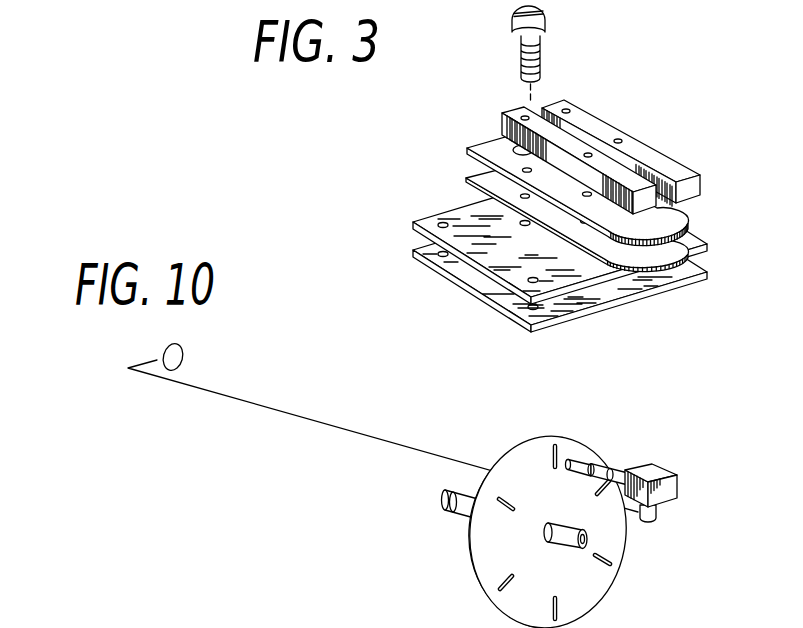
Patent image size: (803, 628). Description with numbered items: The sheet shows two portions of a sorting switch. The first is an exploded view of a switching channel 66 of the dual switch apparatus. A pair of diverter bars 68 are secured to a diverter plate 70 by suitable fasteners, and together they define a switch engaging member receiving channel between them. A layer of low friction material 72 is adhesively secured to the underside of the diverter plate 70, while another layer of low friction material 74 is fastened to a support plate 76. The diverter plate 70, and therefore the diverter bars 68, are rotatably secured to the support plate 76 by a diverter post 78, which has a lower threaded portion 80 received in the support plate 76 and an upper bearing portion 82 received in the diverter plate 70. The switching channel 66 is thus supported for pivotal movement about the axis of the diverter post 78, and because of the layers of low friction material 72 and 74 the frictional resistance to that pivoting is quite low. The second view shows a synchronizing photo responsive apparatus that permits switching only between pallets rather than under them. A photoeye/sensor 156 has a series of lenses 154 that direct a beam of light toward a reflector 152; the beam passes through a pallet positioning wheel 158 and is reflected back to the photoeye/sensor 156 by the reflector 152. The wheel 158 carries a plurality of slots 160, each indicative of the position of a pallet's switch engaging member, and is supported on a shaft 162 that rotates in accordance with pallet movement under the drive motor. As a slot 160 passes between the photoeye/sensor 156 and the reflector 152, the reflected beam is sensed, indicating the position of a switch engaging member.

In FIG. 3, the switching channel 66 is at (565, 172).
In FIG. 3, the diverter bars 68 is at (601, 155).
In FIG. 3, the diverter plate 70 is at (601, 188).
In FIG. 3, the layer of low friction material 72 is at (605, 217).
In FIG. 3, the layer of low friction material 74 is at (547, 236).
In FIG. 3, the support plate 76 is at (560, 267).
In FIG. 3, the diverter post 78 is at (529, 53).
In FIG. 3, the lower threaded portion 80 is at (558, 68).
In FIG. 3, the upper bearing portion 82 is at (492, 29).
In FIG. 10, the reflector 152 is at (383, 406).
In FIG. 10, the lenses 154 is at (596, 441).
In FIG. 10, the photoeye/sensor 156 is at (653, 467).
In FIG. 10, the pallet positioning wheel 158 is at (514, 528).
In FIG. 10, the slots 160 is at (556, 518).
In FIG. 10, the shaft 162 is at (430, 518).